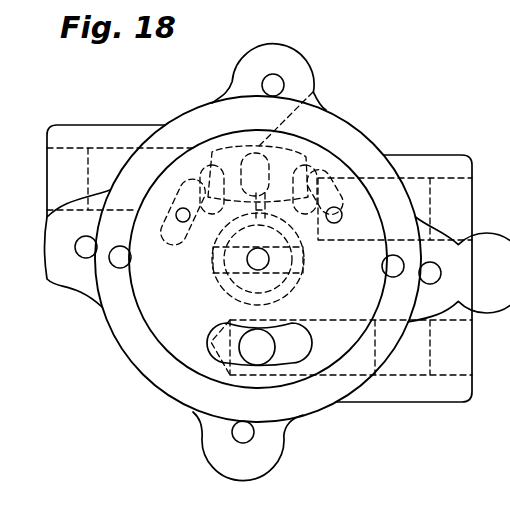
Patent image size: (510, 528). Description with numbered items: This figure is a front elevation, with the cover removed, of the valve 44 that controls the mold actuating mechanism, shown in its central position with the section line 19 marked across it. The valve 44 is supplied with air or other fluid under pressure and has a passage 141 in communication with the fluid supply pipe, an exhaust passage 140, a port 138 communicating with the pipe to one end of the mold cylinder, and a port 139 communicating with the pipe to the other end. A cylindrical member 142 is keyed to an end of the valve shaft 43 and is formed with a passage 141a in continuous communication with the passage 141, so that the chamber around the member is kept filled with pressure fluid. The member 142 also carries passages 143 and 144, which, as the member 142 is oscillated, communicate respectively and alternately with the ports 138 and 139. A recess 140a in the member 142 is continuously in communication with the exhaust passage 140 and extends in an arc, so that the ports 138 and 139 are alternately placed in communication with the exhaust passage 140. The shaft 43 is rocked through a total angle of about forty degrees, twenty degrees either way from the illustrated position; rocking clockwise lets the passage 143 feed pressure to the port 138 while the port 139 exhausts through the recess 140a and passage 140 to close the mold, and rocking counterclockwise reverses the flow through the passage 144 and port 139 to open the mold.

The section line 19-19 through mounting lugs 19 is at (273, 73).
The valve shaft 43 is at (228, 282).
The valve 44 is at (88, 124).
The port 138 is at (196, 172).
The port 139 is at (362, 134).
The exhaust passage 140 is at (284, 120).
The recess 140a is at (268, 185).
The passage 141 is at (267, 338).
The passage 141a is at (208, 340).
The cylindrical member 142 is at (152, 306).
The passage 143 is at (182, 197).
The passage 144 is at (378, 236).